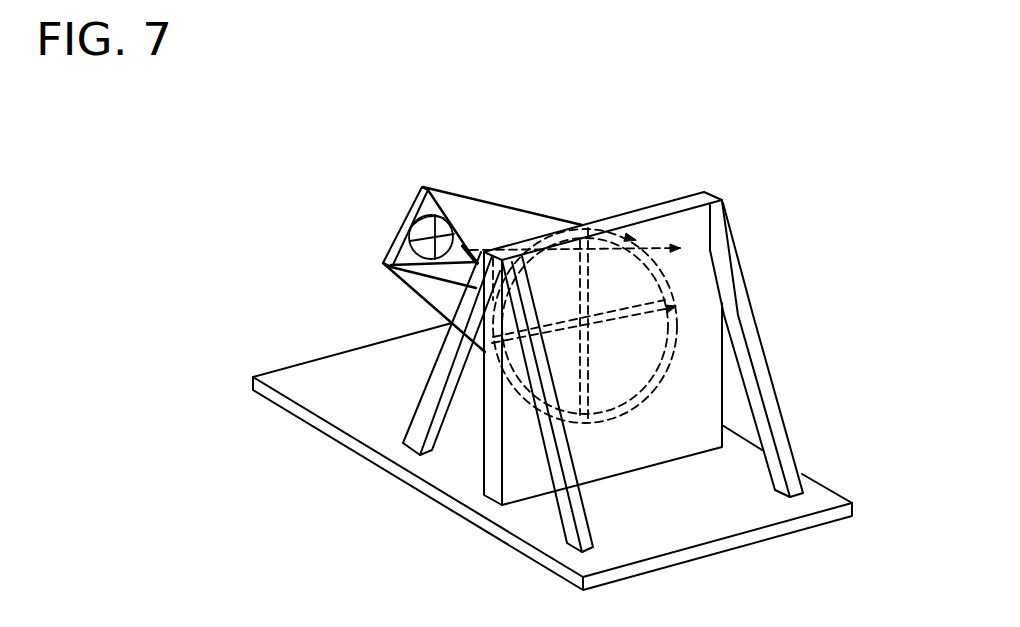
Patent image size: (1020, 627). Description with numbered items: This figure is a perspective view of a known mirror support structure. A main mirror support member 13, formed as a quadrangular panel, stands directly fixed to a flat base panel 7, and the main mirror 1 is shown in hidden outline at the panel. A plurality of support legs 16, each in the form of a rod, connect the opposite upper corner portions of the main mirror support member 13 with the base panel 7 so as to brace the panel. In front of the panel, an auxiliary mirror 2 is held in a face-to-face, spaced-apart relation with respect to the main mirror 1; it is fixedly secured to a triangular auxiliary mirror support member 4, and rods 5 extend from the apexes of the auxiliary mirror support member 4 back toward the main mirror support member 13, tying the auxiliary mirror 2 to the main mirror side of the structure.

The main mirror 1 is at (622, 282).
The auxiliary mirror 2 is at (434, 196).
The auxiliary mirror support member 4 is at (422, 187).
The rods 5 is at (508, 206).
The base panel 7 is at (814, 496).
The main mirror support member 13 is at (688, 195).
The support legs 16 is at (748, 310).